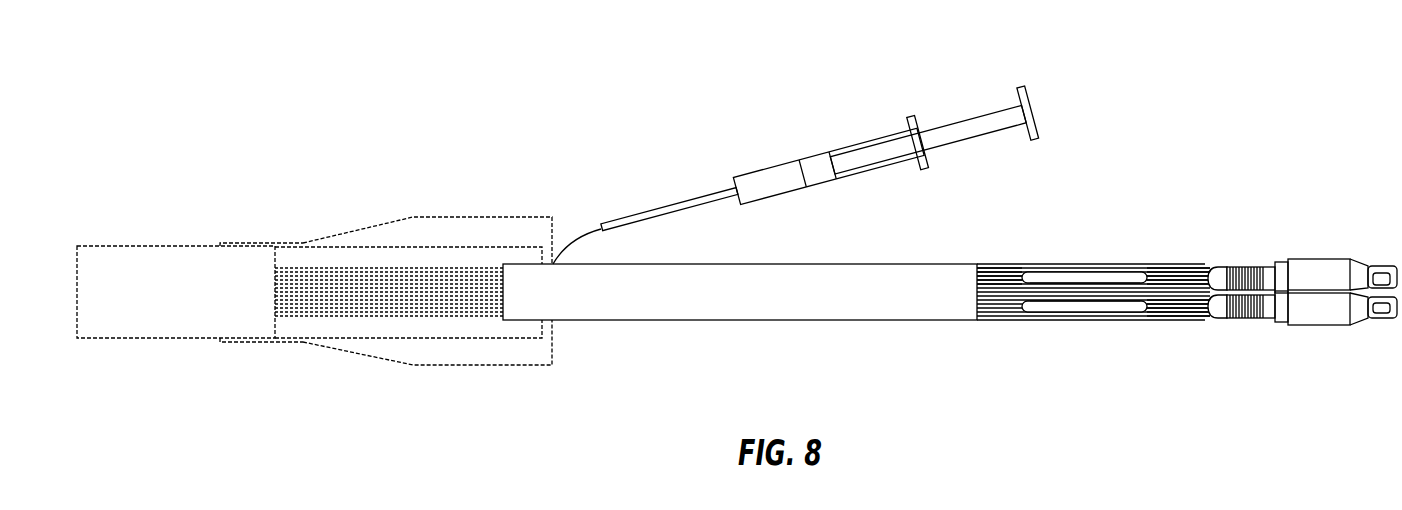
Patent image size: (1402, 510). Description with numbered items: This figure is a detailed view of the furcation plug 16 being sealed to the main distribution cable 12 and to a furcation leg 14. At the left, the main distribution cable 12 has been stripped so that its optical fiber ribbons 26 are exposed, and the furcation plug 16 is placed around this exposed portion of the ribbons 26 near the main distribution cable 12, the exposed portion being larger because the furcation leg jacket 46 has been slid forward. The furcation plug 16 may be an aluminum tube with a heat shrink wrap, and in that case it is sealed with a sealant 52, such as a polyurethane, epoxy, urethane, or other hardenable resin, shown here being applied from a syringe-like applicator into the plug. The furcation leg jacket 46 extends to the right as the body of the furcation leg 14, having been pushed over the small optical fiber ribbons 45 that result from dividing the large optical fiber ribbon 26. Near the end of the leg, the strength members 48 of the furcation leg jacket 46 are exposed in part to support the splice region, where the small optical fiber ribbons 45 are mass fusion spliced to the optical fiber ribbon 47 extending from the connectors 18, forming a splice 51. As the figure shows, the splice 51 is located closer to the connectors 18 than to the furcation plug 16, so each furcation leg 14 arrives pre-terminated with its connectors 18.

The main distribution cable 12 is at (170, 246).
The furcation leg 14 is at (905, 252).
The furcation plug 16 is at (468, 217).
The connector 18 is at (1317, 268).
The optical fiber ribbon 26 is at (1178, 308).
The small optical fiber ribbon 45 is at (1008, 278).
The furcation leg jacket 46 is at (733, 264).
The optical fiber ribbon of the connector 47 is at (1173, 277).
The strength member 48 is at (1113, 273).
The splice 51 is at (1053, 308).
The sealant 52 is at (885, 150).